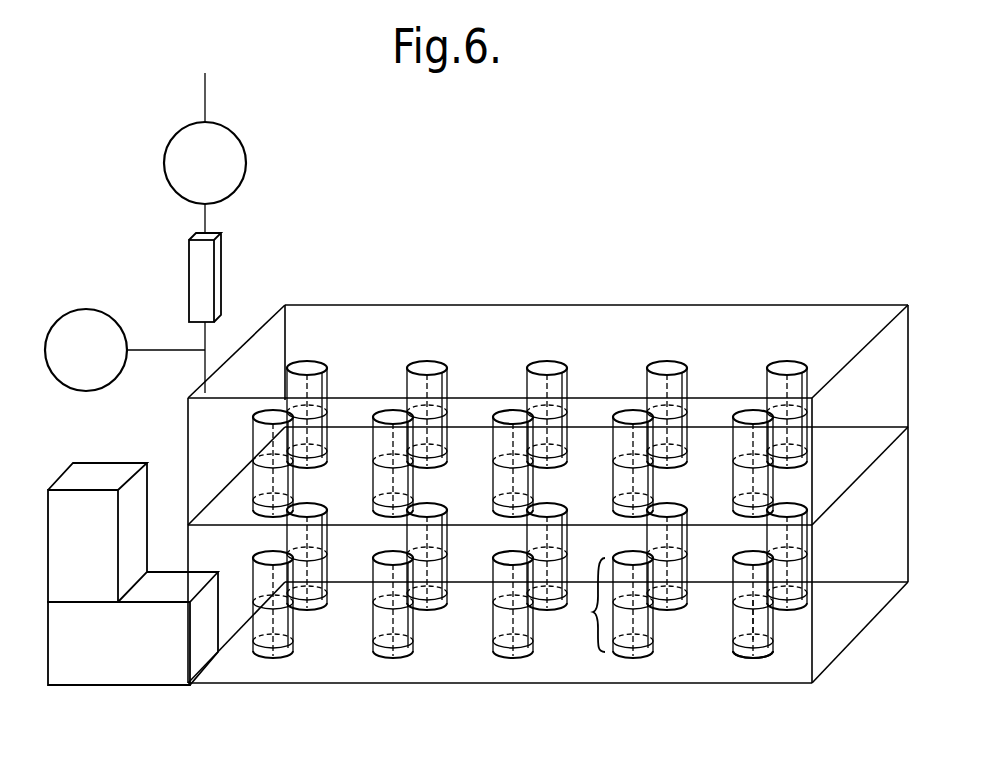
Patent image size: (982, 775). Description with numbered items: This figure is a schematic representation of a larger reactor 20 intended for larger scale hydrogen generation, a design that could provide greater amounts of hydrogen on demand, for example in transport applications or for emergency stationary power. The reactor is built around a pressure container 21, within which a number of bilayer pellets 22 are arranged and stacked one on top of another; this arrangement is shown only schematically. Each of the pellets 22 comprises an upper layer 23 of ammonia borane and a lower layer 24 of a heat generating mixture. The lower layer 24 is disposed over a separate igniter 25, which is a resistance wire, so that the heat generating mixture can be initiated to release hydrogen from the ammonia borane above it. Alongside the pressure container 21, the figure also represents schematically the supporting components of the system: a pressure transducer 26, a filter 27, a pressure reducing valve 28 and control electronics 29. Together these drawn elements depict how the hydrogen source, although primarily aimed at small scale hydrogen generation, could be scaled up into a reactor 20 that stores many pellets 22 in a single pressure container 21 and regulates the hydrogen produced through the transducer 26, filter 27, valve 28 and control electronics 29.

The reactor 20 is at (381, 358).
The pressure container 21 is at (657, 305).
The bilayer pellets 22 is at (587, 617).
The upper layer 23 is at (742, 588).
The lower layer 24 is at (763, 623).
The igniter 25 is at (750, 653).
The pressure transducer 26 is at (73, 345).
The filter 27 is at (202, 282).
The pressure reducing valve 28 is at (192, 163).
The control electronics 29 is at (72, 482).